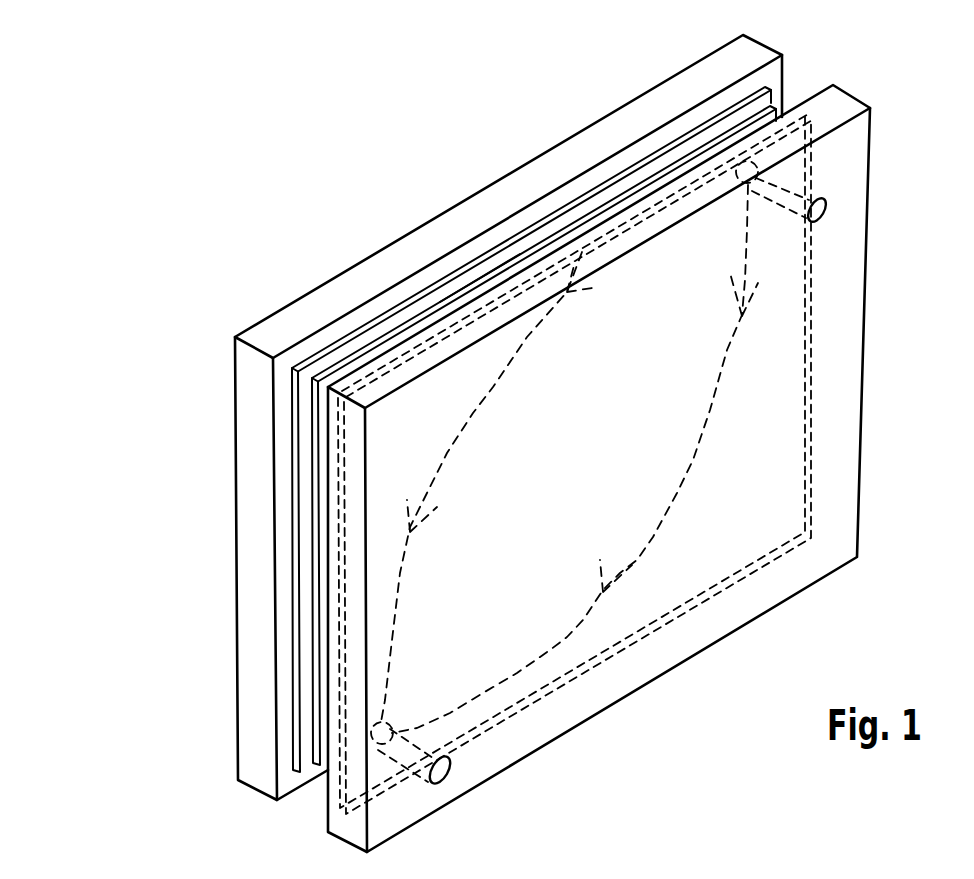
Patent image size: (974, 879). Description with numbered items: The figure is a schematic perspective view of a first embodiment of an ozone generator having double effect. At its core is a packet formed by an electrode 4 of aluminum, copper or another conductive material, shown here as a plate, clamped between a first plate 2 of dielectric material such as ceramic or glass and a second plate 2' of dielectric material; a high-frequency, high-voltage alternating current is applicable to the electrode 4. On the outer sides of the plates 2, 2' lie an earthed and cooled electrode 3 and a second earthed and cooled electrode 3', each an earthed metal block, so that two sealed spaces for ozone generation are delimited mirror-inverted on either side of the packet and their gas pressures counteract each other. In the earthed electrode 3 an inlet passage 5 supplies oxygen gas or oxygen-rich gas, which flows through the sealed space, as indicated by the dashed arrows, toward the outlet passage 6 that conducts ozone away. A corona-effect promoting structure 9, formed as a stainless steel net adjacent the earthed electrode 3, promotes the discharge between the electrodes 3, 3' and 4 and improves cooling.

The plate of dielectric material 2 is at (476, 435).
The second plate of dielectric material 2' is at (463, 429).
The earthed and cooled electrode 3 is at (630, 468).
The second earthed and cooled electrode 3' is at (508, 417).
The electrode 4 is at (482, 268).
The inlet passage 5 is at (826, 210).
The outlet passage 6 is at (448, 774).
The corona-effect promoting structure 9 is at (812, 447).